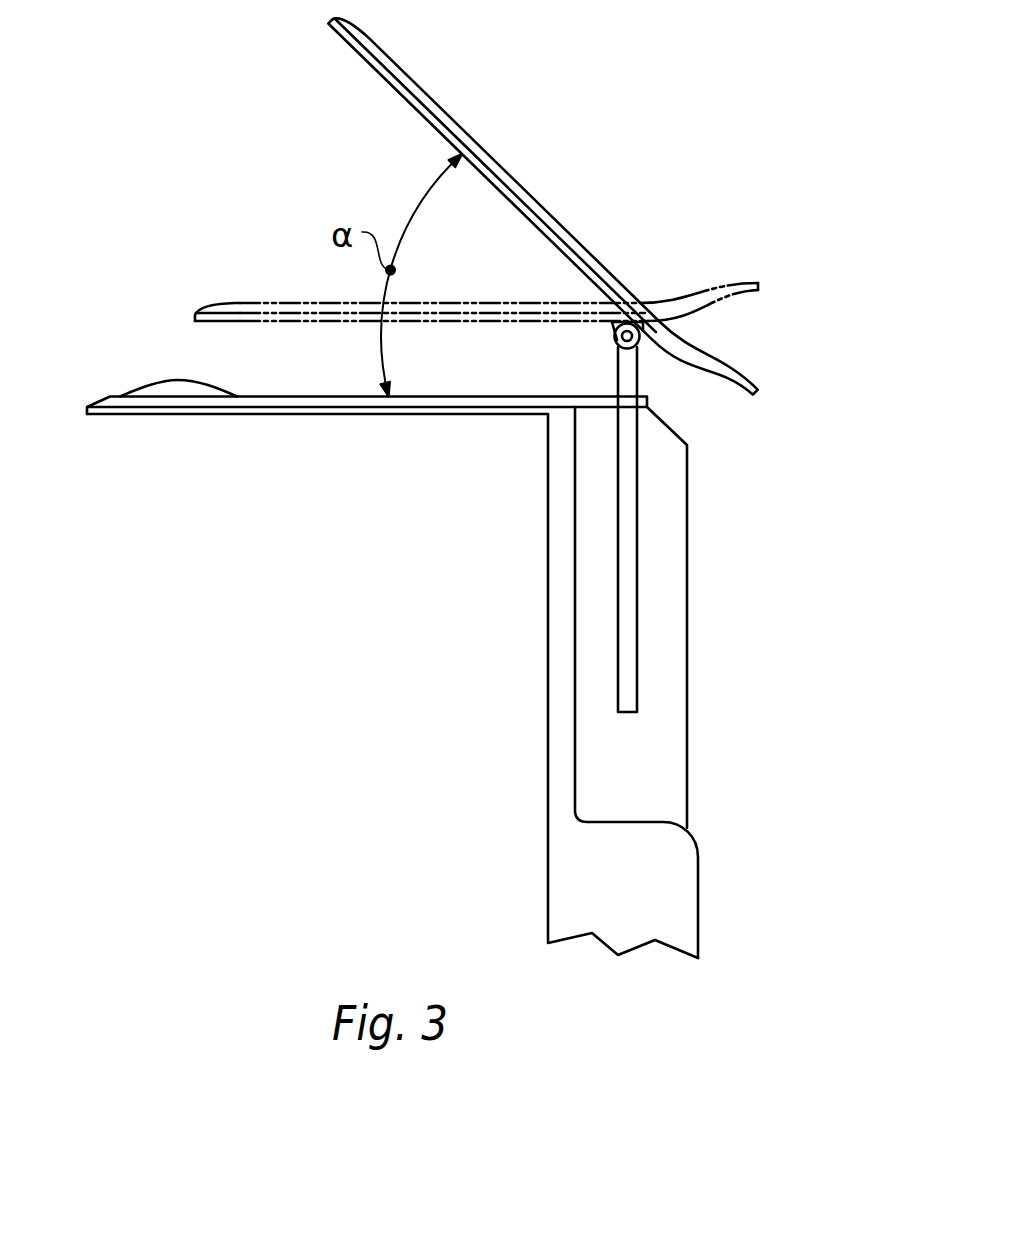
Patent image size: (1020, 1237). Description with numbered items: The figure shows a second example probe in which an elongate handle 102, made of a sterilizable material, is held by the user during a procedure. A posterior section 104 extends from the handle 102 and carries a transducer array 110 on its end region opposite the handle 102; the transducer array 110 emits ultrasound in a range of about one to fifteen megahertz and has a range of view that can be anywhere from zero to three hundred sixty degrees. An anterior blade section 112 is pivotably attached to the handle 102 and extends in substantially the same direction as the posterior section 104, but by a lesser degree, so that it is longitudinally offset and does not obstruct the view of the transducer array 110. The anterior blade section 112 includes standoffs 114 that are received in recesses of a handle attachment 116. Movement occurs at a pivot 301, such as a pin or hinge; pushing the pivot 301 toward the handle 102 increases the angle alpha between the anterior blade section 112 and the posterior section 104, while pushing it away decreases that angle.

The elongate handle 102 is at (633, 918).
The posterior section 104 is at (357, 404).
The transducer array 110 is at (157, 385).
The anterior blade section 112 is at (462, 124).
The standoffs 114 is at (632, 376).
The handle attachment 116 is at (677, 640).
The pivot 301 is at (612, 336).